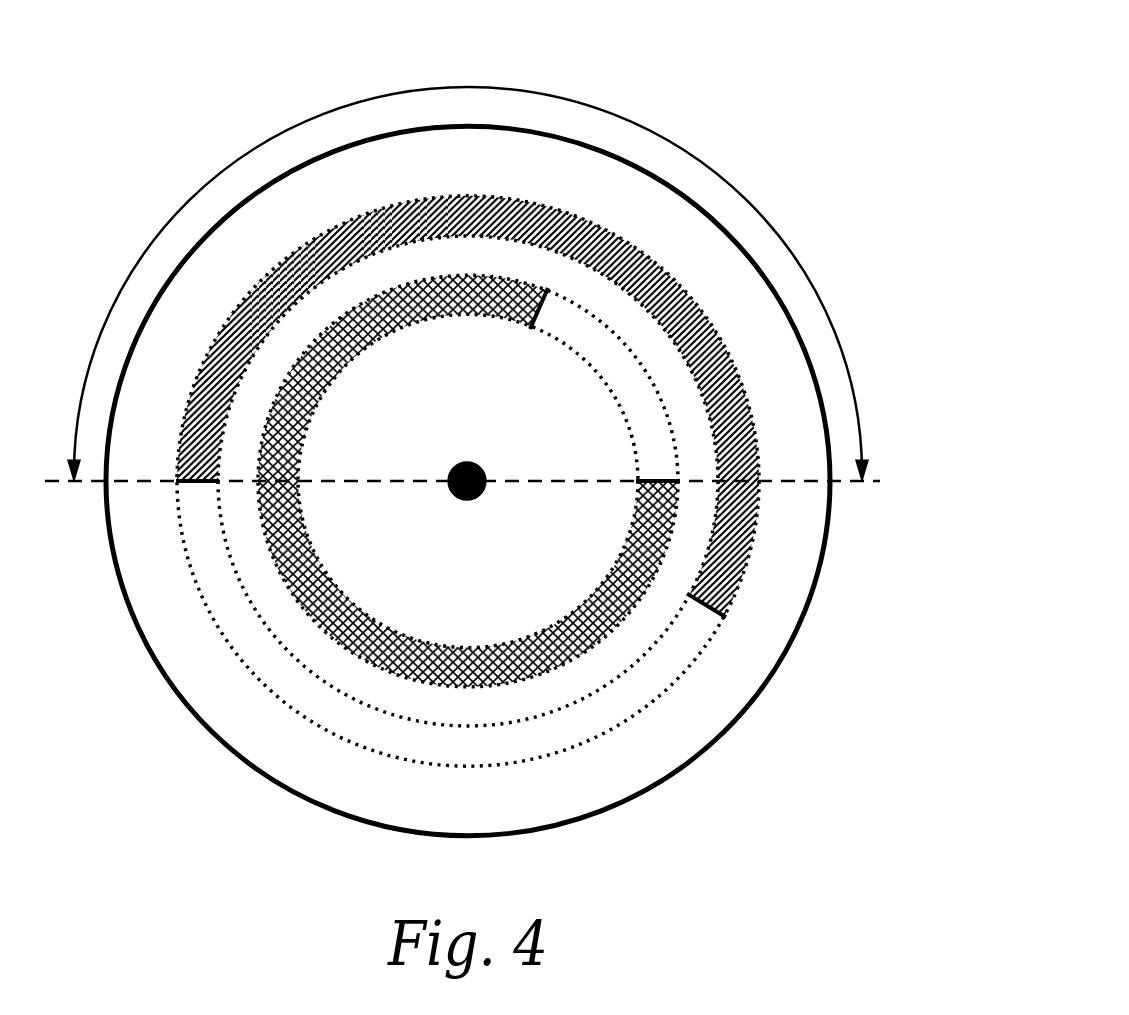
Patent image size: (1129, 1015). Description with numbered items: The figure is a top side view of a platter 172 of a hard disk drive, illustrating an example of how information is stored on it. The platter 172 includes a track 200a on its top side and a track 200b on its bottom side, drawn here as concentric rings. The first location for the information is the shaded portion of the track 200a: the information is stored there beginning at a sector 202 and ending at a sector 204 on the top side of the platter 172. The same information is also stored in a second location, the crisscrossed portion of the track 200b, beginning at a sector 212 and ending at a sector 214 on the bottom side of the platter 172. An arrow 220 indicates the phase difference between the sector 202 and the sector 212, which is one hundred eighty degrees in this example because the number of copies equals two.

The platter 172 is at (733, 124).
The arrow 220 is at (803, 278).
The track 200a is at (300, 702).
The track 200b is at (368, 612).
The sector 202 is at (180, 461).
The sector 204 is at (712, 620).
The sector 212 is at (656, 478).
The sector 214 is at (543, 308).